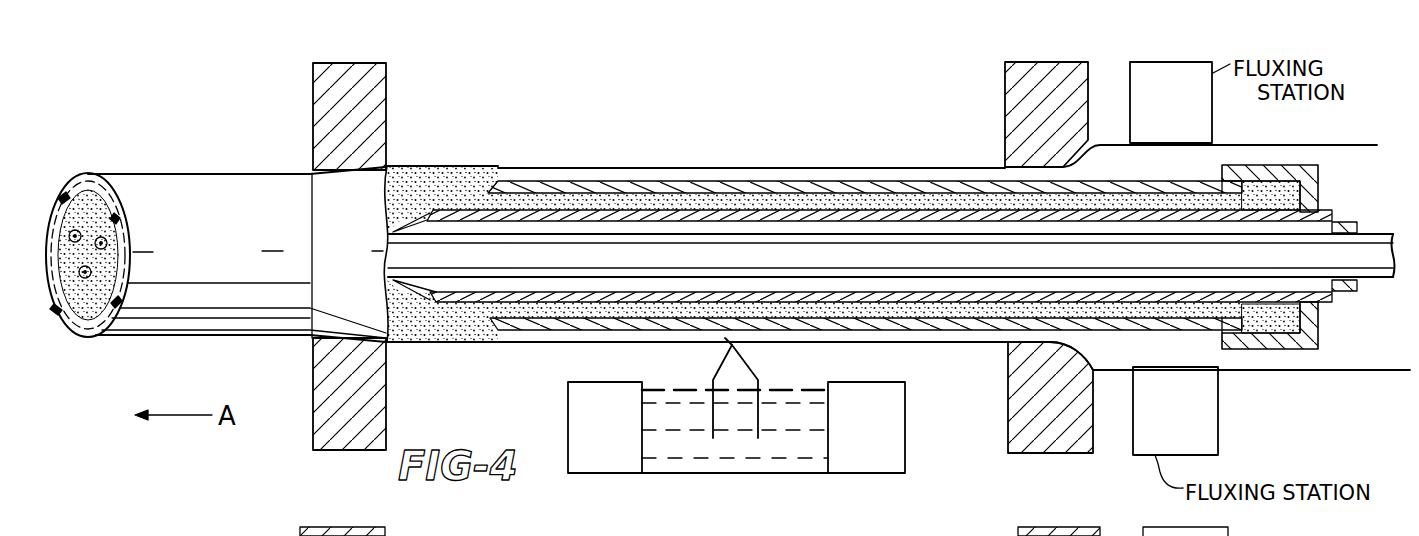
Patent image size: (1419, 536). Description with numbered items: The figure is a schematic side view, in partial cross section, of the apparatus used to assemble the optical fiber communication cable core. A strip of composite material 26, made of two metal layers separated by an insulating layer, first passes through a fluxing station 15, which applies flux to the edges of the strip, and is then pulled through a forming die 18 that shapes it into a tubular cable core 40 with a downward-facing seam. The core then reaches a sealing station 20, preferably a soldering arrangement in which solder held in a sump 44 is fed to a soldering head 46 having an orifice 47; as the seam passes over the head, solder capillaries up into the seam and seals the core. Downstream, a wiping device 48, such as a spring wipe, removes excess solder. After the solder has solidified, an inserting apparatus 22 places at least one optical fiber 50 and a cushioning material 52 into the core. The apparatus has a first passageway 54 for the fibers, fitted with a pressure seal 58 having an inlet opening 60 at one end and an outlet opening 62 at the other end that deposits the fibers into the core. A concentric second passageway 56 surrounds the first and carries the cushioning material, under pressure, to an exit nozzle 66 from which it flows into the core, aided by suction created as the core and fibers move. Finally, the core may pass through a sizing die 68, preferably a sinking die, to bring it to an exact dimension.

The fluxing station 15 is at (1186, 113).
The forming die 18 is at (1005, 78).
The sealing station 20 is at (775, 473).
The apparatus for inserting the optical fiber and cushioning material 22 is at (900, 180).
The composite material 26 is at (1293, 158).
The tubular cable core 40 is at (246, 185).
The sump 44 is at (690, 462).
The soldering head 46 is at (755, 370).
The orifice 47 is at (725, 338).
The wiping device 48 is at (670, 347).
The optical fiber 50 is at (82, 276).
The cushioning material 52 is at (73, 195).
The first chamber or passageway 54 is at (1322, 212).
The second chamber or passageway 56 is at (1296, 343).
The pressure seal 58 is at (1340, 222).
The inlet opening 60 is at (1365, 285).
The outlet opening 62 is at (393, 287).
The exit nozzle 66 is at (480, 196).
The sizing die 68 is at (313, 452).